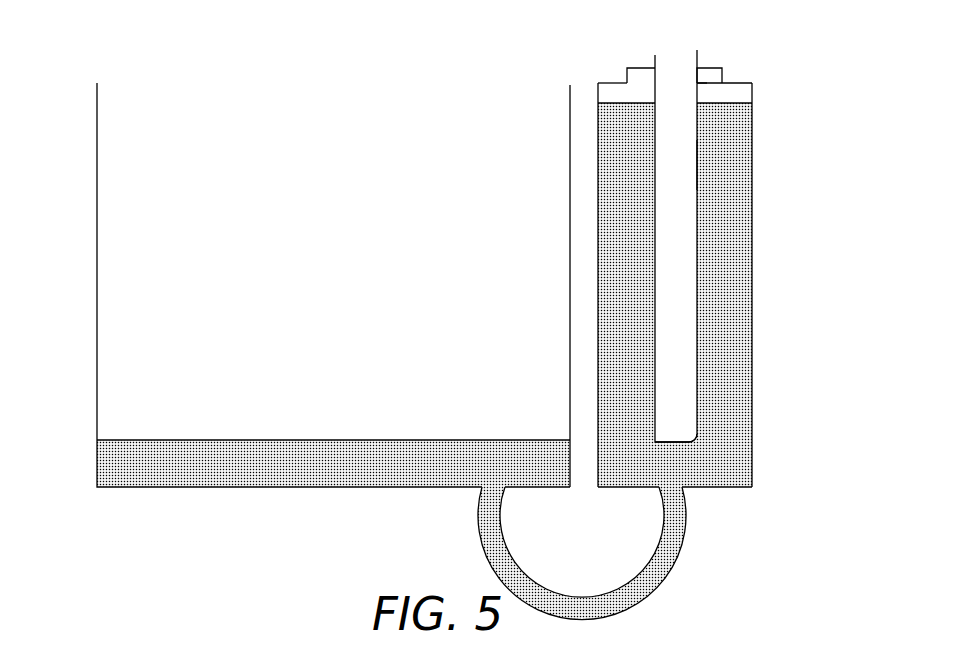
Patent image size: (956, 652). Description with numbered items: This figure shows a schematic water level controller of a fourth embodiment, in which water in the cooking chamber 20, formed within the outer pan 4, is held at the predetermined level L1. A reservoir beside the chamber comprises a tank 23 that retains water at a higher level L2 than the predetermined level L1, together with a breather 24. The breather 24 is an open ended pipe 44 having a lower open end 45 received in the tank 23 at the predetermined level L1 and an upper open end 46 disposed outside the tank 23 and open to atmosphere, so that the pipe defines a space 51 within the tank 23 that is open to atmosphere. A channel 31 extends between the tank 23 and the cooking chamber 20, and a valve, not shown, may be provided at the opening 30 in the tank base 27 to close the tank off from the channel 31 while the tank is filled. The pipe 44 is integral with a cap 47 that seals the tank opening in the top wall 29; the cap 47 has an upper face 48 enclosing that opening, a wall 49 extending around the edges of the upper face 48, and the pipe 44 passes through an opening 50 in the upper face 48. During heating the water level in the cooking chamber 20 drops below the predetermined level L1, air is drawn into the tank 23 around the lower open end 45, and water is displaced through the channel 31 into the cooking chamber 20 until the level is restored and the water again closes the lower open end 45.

The outer pan 4 is at (98, 183).
The cooking chamber 20 is at (346, 215).
The tank 23 is at (752, 340).
The breather 24 is at (697, 282).
The base 27 is at (737, 488).
The top wall 29 is at (740, 82).
The opening 30 is at (672, 488).
The channel 31 is at (623, 550).
The pipe 44 is at (700, 164).
The lower open end 45 is at (705, 452).
The upper open end 46 is at (698, 52).
The cap 47 is at (704, 85).
The upper face 48 is at (637, 67).
The wall 49 is at (628, 82).
The opening 50 is at (677, 68).
The space 51 is at (678, 208).
The predetermined level L1 is at (208, 440).
The higher level L2 is at (605, 103).